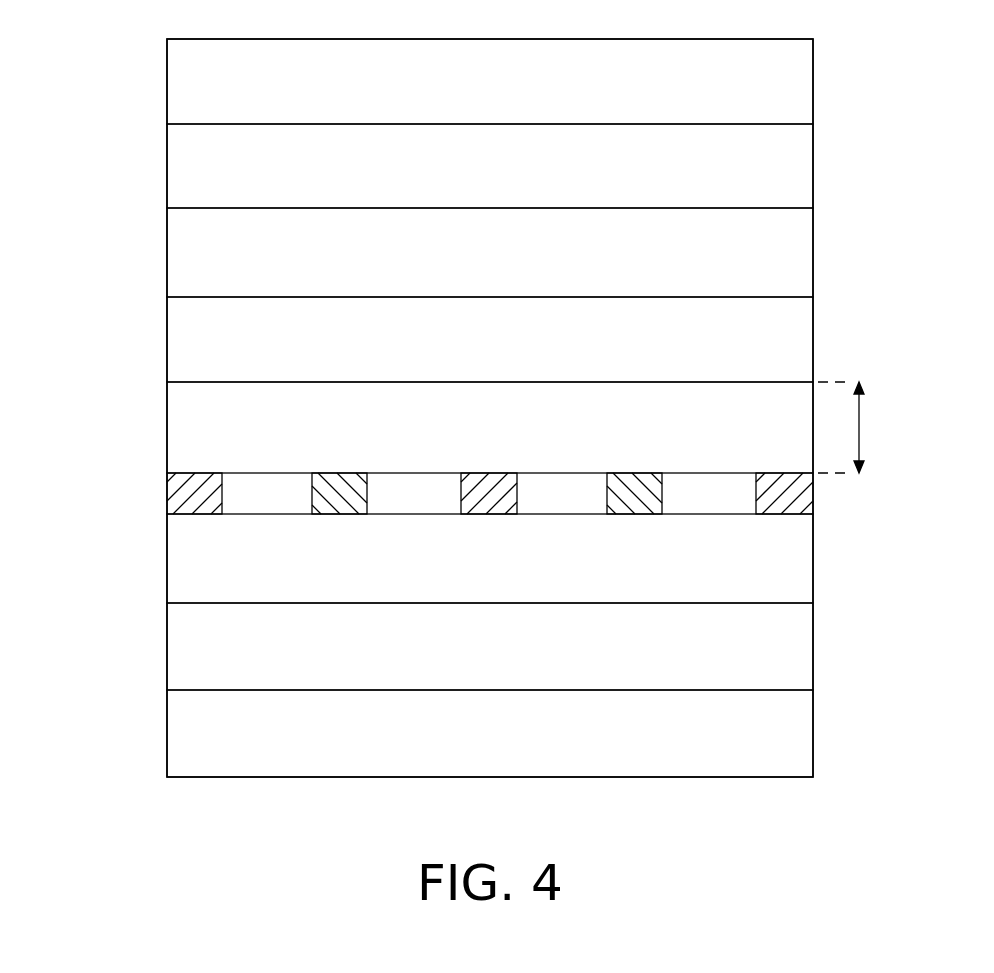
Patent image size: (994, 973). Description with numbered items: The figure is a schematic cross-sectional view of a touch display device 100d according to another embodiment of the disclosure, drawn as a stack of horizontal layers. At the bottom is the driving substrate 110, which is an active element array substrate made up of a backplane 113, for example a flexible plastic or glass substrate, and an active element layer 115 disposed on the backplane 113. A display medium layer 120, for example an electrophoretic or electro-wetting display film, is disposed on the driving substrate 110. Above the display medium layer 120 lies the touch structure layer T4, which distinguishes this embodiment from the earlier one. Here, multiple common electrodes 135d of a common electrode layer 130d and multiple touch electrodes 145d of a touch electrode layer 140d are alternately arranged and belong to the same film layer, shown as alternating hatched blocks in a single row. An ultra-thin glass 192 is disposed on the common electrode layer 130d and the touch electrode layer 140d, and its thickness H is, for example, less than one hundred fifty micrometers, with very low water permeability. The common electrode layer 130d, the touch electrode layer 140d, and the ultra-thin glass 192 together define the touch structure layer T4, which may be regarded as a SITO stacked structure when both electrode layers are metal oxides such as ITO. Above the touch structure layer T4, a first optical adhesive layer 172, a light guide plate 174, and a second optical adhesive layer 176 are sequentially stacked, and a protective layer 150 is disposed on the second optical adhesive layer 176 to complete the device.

The touch display device 100d is at (923, 824).
The protective layer 150 is at (172, 80).
The second optical adhesive layer 176 is at (172, 165).
The light guide plate 174 is at (172, 262).
The first optical adhesive layer 172 is at (172, 345).
The ultra-thin glass 192 is at (172, 405).
The touch electrodes 145d is at (632, 480).
The touch electrode layer 140d is at (370, 487).
The common electrodes 135d is at (781, 502).
The common electrode layer 130d is at (445, 532).
The touch structure layer T4 is at (72, 392).
The thickness H is at (854, 427).
The display medium layer 120 is at (808, 562).
The driving substrate 110 is at (92, 625).
The active element layer 115 is at (172, 642).
The backplane 113 is at (172, 732).